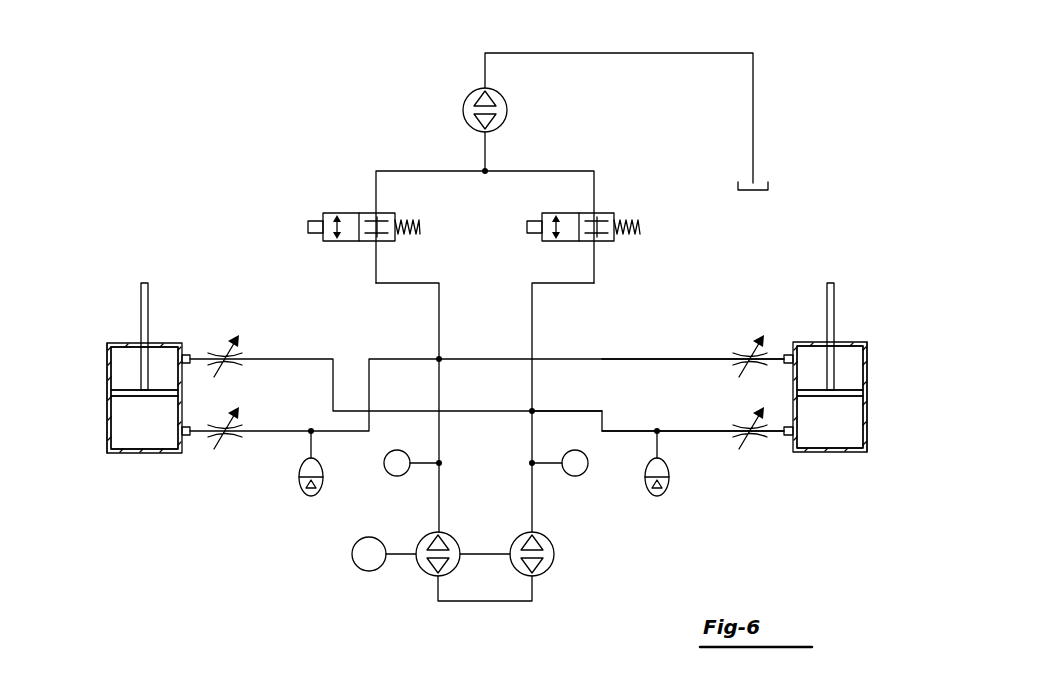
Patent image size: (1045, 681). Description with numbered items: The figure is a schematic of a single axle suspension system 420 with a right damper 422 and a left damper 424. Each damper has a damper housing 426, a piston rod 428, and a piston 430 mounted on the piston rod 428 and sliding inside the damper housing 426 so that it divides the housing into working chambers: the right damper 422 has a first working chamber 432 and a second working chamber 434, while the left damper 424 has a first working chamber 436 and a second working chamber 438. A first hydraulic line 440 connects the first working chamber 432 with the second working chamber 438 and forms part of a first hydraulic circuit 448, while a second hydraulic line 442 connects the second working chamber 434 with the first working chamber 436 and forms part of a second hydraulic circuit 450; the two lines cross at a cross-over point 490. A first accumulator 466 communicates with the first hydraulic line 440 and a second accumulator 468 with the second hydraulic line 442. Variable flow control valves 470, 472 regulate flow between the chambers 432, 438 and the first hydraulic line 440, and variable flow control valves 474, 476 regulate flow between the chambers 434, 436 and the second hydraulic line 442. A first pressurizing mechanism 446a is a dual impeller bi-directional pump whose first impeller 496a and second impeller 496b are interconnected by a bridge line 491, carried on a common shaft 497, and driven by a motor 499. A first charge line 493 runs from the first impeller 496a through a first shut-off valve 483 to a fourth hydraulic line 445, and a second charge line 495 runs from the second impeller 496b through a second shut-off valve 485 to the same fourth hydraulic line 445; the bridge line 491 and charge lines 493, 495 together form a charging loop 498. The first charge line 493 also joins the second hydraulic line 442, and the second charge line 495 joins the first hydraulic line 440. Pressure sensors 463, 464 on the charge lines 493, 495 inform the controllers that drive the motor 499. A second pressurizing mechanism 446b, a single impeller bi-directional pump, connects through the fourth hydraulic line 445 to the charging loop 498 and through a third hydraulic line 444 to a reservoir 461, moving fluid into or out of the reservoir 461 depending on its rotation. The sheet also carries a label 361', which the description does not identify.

The hydraulic system 361' is at (303, 16).
The third hydraulic line 444 is at (626, 52).
The second pressurizing mechanism 446b is at (463, 109).
The fourth hydraulic line 445 is at (485, 152).
The charging loop 498 is at (562, 146).
The second shut-off valve 485 is at (333, 212).
The first shut-off valve 483 is at (606, 212).
The reservoir 461 is at (776, 197).
The left damper 424 is at (100, 322).
The piston rod 428 is at (141, 292).
The first working chamber of left damper 436 is at (168, 355).
The fourth variable flow control valve 476 is at (222, 351).
The cross-over point 490 is at (358, 404).
The second charge line 495 is at (439, 310).
The first charge line 493 is at (532, 310).
The first hydraulic circuit 448 is at (614, 350).
The first hydraulic line 440 is at (703, 357).
The first variable flow control valve 470 is at (747, 351).
The first working chamber of right damper 432 is at (812, 355).
The right damper 422 is at (874, 325).
The piston 430 is at (124, 393).
The damper housing 426 is at (107, 413).
The second working chamber of left damper 438 is at (137, 432).
The second working chamber of right damper 434 is at (845, 432).
The second hydraulic circuit 450 is at (571, 402).
The second hydraulic line 442 is at (696, 429).
The second variable flow control valve 472 is at (228, 438).
The third variable flow control valve 474 is at (755, 438).
The first accumulator 466 is at (301, 491).
The second pressure sensor 464 is at (395, 477).
The first pressure sensor 463 is at (578, 477).
The second accumulator 468 is at (668, 491).
The common shaft 497 is at (485, 552).
The motor 499 is at (352, 554).
The second impeller 496b is at (418, 570).
The first impeller 496a is at (546, 572).
The bridge line 491 is at (489, 602).
The single axle suspension system 420 is at (250, 548).
The first pressurizing mechanism 446a is at (356, 642).